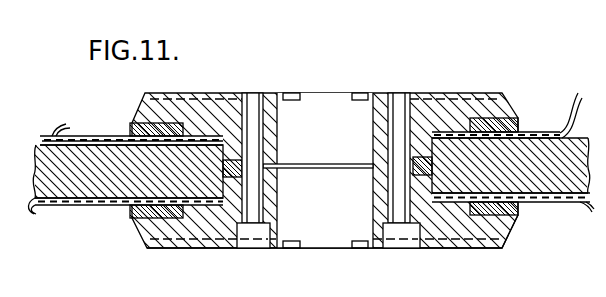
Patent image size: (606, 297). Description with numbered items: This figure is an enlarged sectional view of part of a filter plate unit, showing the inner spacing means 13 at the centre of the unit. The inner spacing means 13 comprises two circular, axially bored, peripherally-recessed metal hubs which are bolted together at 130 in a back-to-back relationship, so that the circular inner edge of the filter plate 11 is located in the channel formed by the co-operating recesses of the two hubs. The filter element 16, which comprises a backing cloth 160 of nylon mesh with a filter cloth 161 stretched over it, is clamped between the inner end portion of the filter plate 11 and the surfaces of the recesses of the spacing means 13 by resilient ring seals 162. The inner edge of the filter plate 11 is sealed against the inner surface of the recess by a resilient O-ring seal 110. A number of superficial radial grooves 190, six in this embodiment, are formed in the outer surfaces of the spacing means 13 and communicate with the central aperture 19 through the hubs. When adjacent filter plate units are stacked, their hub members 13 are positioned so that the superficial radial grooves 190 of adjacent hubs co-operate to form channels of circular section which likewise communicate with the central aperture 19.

The filter plate 11 is at (99, 150).
The inner spacing means 13 is at (504, 218).
The filter element 16 is at (572, 128).
The central aperture 19 is at (317, 107).
The resilient O-ring seal 110 is at (413, 166).
The bolt 130 is at (250, 100).
The backing cloth 160 is at (36, 208).
The filter cloth 161 is at (45, 210).
The resilient ring seals 162 is at (143, 220).
The superficial radial grooves 190 is at (451, 96).